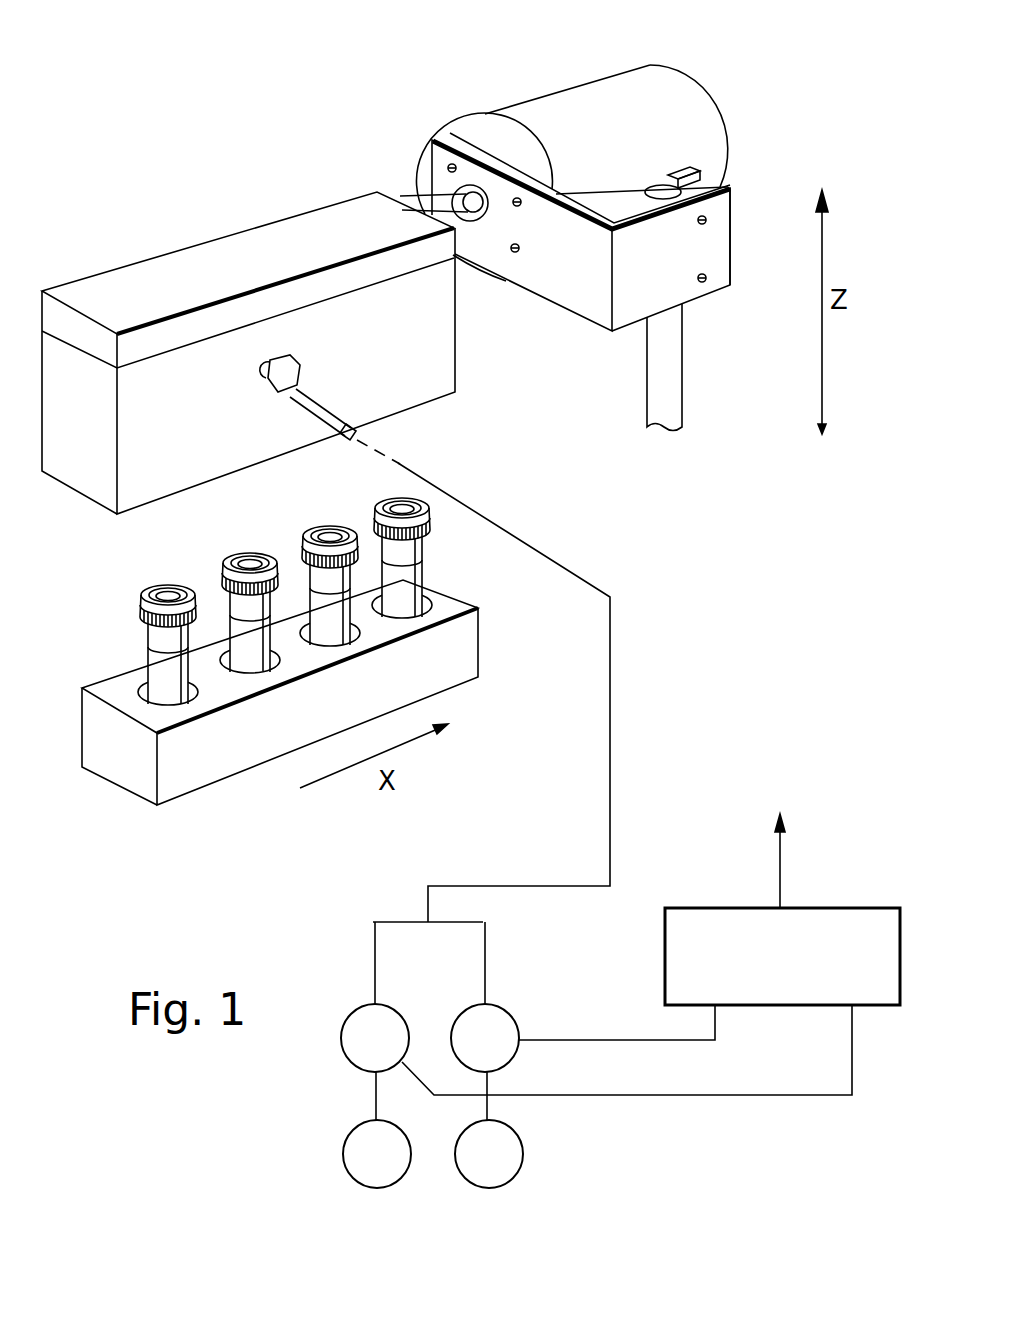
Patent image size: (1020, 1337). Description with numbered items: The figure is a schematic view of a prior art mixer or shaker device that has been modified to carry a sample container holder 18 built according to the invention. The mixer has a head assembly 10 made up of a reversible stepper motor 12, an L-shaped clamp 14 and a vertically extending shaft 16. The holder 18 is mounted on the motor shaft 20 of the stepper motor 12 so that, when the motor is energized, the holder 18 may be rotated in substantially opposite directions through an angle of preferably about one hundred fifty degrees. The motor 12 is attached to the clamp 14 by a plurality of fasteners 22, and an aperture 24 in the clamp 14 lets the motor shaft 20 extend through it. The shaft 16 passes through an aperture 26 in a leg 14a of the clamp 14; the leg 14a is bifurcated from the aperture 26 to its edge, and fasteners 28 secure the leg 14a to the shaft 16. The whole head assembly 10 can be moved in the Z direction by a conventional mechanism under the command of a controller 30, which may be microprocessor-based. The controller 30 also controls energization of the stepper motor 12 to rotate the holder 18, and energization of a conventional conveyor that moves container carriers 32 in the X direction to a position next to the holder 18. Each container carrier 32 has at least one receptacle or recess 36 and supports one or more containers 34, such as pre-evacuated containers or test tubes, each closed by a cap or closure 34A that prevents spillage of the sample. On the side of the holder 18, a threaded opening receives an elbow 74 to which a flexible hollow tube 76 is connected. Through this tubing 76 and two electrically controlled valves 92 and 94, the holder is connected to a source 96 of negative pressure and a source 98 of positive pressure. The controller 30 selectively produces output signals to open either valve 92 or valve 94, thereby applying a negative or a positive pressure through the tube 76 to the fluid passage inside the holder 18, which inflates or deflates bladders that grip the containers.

The head assembly 10 is at (346, 143).
The reversible stepper motor 12 is at (730, 128).
The L-shaped clamp 14 is at (571, 292).
The leg of the clamp 14a is at (682, 252).
The vertically extending shaft 16 is at (683, 357).
The sample container holder 18 is at (198, 245).
The motor shaft 20 is at (418, 202).
The fasteners 22 is at (515, 252).
The aperture 24 is at (477, 186).
The aperture 26 is at (657, 186).
The fasteners 28 is at (708, 222).
The controller 30 is at (728, 907).
The container carrier 32 is at (457, 591).
The container 34 is at (418, 570).
The cap or closure 34A is at (372, 512).
The receptacle or recess 36 is at (142, 683).
The elbow 74 is at (280, 380).
The flexible hollow tube 76 is at (326, 408).
The electrically controlled valve 92 is at (388, 1001).
The electrically controlled valve 94 is at (506, 1001).
The source of negative pressure 96 is at (404, 1184).
The source of positive pressure 98 is at (523, 1167).